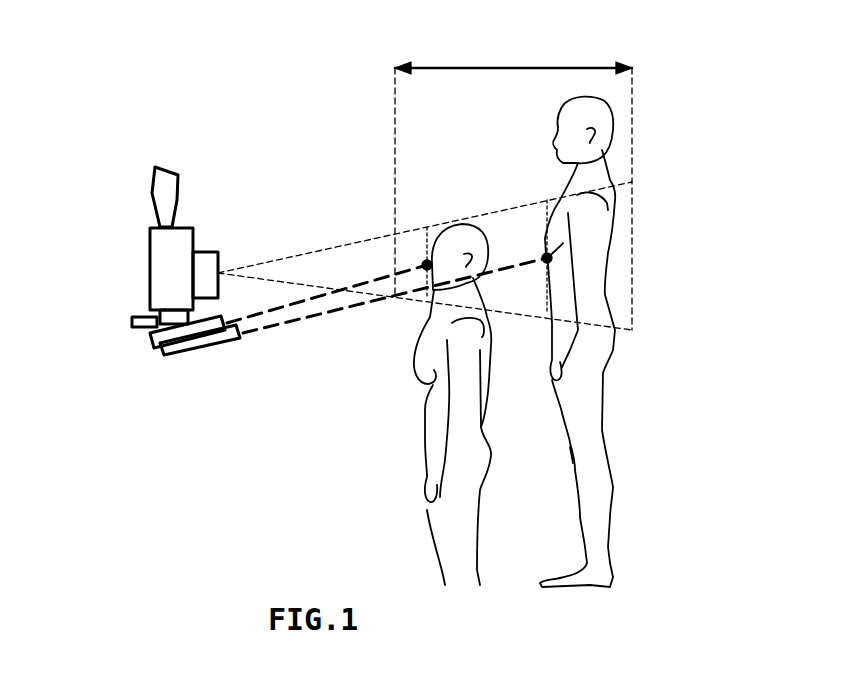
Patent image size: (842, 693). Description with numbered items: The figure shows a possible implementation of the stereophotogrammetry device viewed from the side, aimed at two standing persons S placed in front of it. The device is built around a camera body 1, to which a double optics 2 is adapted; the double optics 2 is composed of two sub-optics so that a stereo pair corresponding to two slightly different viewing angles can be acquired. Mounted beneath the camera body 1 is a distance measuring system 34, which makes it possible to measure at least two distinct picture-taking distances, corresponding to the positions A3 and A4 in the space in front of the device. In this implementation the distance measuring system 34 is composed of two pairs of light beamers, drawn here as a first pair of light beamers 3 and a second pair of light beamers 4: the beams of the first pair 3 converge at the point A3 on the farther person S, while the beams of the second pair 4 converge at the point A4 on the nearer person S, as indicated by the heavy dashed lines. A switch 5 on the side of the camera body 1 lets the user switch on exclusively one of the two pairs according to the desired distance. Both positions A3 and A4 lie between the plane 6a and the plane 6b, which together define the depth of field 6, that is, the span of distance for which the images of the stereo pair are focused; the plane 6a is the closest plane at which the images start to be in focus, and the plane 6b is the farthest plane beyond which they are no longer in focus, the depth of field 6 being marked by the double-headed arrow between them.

The camera body 1 is at (172, 265).
The double optics 2 is at (222, 270).
The first pair of light beamers 3 is at (187, 352).
The second pair of light beamers 4 is at (213, 346).
The switch 5 is at (137, 325).
The distance measuring system 34 is at (138, 440).
The depth of field 6 is at (513, 42).
The near plane 6a is at (394, 68).
The far plane 6b is at (622, 42).
The first picture-taking position A3 is at (547, 258).
The second picture-taking position A4 is at (427, 267).
The subjects S is at (590, 463).